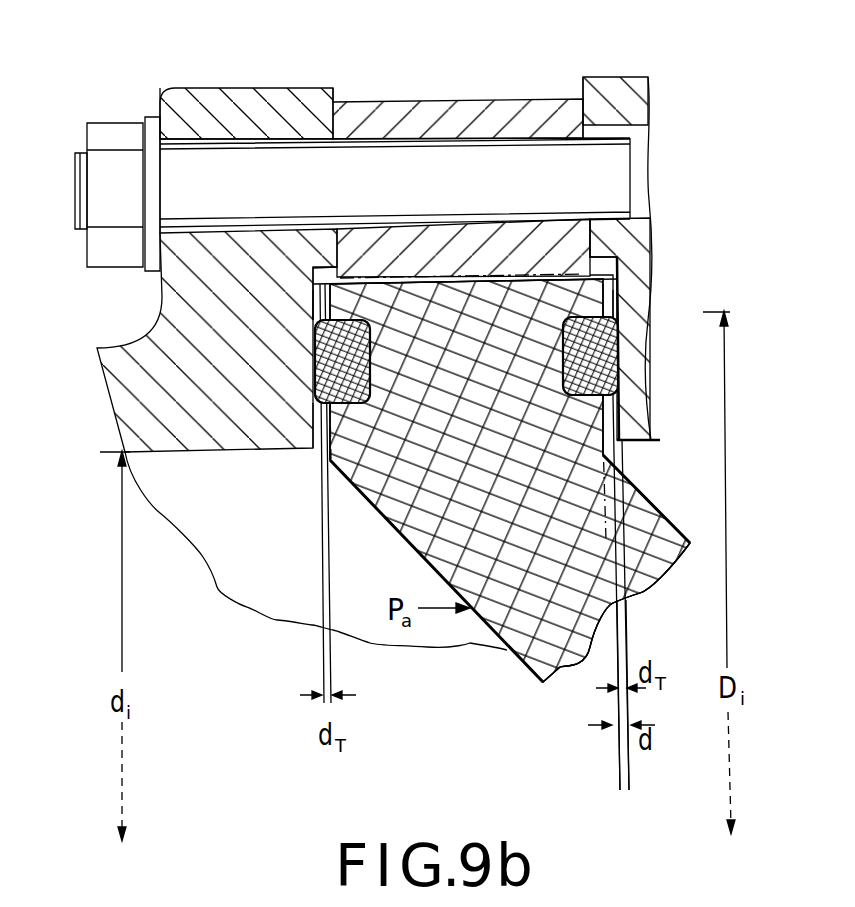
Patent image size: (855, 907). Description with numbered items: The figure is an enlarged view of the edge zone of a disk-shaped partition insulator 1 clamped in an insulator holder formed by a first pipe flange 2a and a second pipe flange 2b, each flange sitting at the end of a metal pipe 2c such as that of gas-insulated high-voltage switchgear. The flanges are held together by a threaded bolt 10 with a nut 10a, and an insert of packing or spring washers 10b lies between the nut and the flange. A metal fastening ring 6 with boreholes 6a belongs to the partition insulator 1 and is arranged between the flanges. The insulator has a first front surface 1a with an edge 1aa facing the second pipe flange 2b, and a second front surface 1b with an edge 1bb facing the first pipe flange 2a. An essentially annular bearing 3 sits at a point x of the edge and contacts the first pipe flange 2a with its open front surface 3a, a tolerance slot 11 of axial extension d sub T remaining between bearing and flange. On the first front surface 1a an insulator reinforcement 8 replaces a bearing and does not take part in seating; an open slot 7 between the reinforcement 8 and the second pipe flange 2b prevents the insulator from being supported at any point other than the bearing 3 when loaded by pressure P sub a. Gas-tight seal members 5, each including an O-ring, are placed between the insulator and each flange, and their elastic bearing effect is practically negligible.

The partition insulator 1 is at (570, 625).
The first front surface 1a is at (678, 535).
The edge of the first front surface 1aa is at (604, 420).
The second front surface 1b is at (507, 650).
The edge of the second front surface 1bb is at (322, 467).
The first pipe flange 2a is at (225, 112).
The second pipe flange 2b is at (610, 95).
The metal pipe 2c is at (163, 405).
The bearing 3 is at (317, 298).
The open front surface of the bearing 3a is at (617, 297).
The gas-tight seal member 5 is at (345, 358).
The metal fastening ring 6 is at (481, 117).
The borehole 6a is at (412, 143).
The open slot 7 is at (629, 775).
The insulator reinforcement 8 is at (622, 427).
The threaded bolt 10 is at (263, 173).
The nut 10a is at (112, 131).
The spring washer 10b is at (150, 124).
The tolerance slot 11 is at (317, 308).
The point of the edge x is at (327, 283).